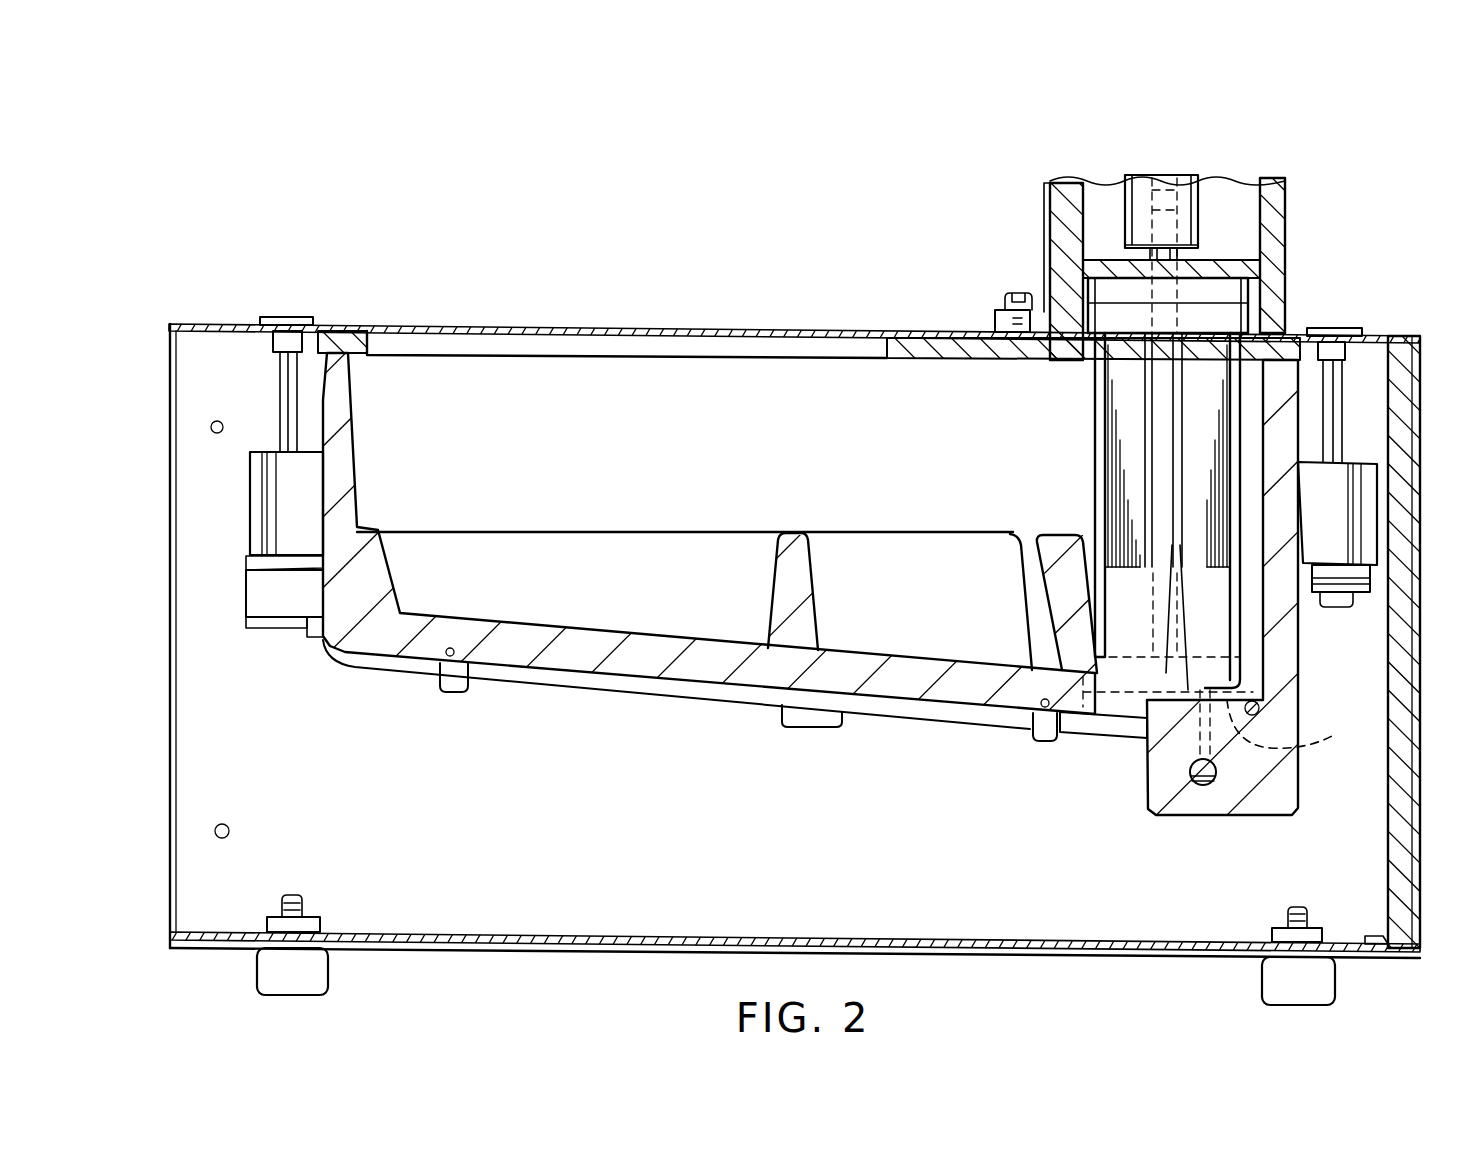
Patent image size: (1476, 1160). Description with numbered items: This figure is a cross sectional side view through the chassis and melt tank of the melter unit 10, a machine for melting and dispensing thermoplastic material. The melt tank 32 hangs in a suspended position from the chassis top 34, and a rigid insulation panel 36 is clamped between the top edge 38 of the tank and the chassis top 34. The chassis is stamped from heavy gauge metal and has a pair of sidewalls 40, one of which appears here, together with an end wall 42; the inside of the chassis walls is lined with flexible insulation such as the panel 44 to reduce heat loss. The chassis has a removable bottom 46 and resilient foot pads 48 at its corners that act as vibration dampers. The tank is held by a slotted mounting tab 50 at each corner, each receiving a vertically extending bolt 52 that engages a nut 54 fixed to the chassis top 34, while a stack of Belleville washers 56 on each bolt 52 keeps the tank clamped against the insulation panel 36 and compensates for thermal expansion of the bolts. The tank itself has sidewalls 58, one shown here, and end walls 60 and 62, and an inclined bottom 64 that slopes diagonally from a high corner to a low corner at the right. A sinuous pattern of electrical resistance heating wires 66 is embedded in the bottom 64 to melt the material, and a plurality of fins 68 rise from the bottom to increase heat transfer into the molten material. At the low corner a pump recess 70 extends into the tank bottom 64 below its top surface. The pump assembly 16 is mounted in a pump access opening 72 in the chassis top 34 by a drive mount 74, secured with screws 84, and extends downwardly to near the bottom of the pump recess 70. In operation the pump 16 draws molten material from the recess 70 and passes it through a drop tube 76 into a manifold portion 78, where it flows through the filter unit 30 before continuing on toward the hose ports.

The melter unit 10 is at (566, 314).
The pump assembly 16 is at (1095, 430).
The filter unit 30 is at (1200, 790).
The melt tank 32 is at (676, 708).
The chassis top 34 is at (925, 331).
The rigid insulation panel 36 is at (950, 360).
The top edge 38 is at (360, 345).
The sidewall 40 is at (917, 913).
The end wall 42 is at (1430, 642).
The flexible insulation panel 44 is at (1386, 862).
The removable bottom 46 is at (1052, 937).
The resilient foot pad 48 is at (330, 977).
The slotted mounting tab 50 is at (247, 512).
The bolt 52 is at (280, 377).
The nut 54 is at (289, 317).
The Belleville washers 56 is at (1398, 595).
The sidewall 58 is at (657, 370).
The end wall 60 is at (356, 461).
The end wall 62 is at (1293, 390).
The inclined bottom 64 is at (628, 632).
The electrical resistance heating wires 66 is at (443, 653).
The fins 68 is at (1033, 576).
The pump recess 70 is at (1120, 703).
The pump access opening 72 is at (1247, 318).
The drive mount 74 is at (1052, 258).
The drop tube 76 is at (1332, 753).
The manifold portion 78 is at (1282, 792).
The screws 84 is at (1012, 300).